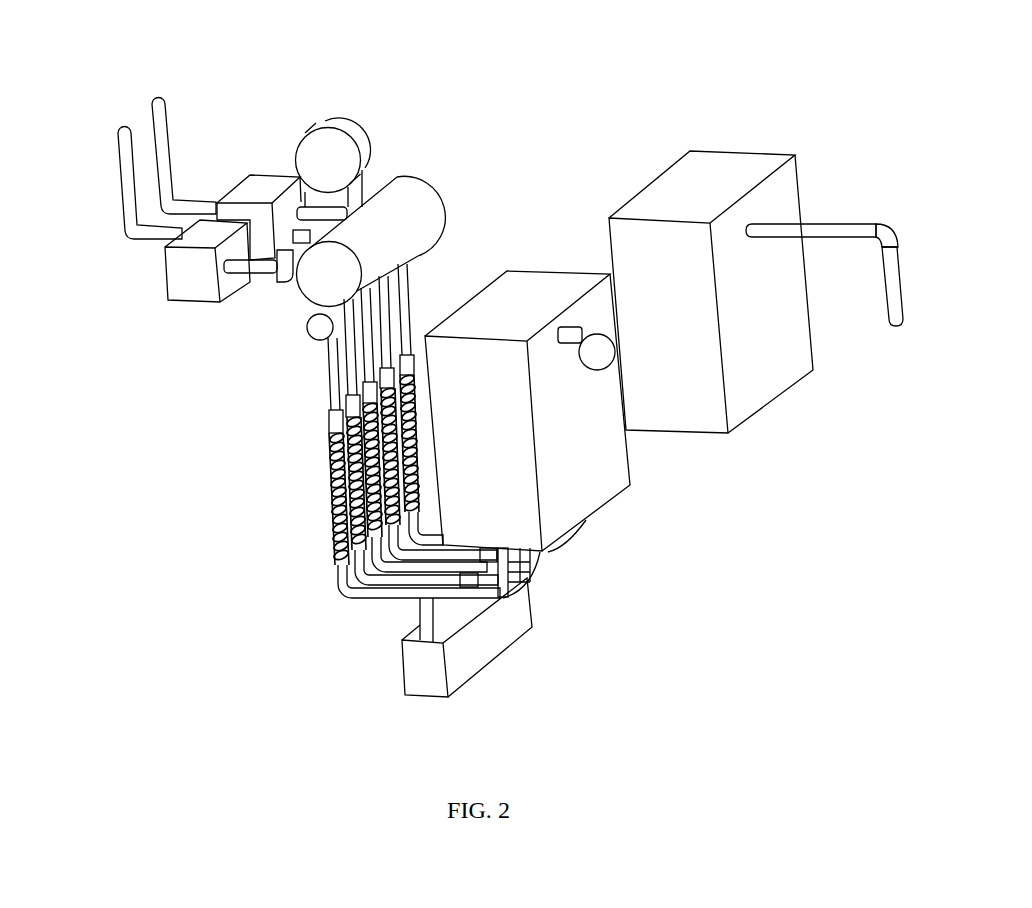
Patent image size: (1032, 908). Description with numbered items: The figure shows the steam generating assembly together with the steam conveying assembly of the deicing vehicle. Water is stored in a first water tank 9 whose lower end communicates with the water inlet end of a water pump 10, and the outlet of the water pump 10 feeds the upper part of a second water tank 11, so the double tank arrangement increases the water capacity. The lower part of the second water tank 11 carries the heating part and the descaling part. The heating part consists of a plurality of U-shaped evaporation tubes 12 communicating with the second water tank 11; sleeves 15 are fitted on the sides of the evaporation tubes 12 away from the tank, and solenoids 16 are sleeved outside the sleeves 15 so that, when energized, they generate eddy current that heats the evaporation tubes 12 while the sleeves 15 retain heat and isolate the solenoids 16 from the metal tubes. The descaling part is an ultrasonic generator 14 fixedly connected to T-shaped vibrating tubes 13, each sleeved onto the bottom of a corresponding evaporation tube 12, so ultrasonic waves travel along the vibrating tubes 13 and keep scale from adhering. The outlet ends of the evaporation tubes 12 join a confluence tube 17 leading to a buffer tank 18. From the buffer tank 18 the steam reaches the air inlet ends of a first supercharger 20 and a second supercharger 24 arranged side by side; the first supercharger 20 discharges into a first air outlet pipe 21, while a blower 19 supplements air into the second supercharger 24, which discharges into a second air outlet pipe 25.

The first water tank 9 is at (703, 330).
The water pump 10 is at (597, 352).
The second water tank 11 is at (517, 500).
The evaporation tubes 12 is at (498, 597).
The vibrating tubes 13 is at (427, 608).
The ultrasonic generator 14 is at (470, 652).
The sleeves 15 is at (348, 563).
The solenoids 16 is at (345, 512).
The confluence tube 17 is at (320, 327).
The buffer tank 18 is at (328, 275).
The blower 19 is at (328, 160).
The first supercharger 20 is at (198, 258).
The first air outlet pipe 21 is at (127, 167).
The second supercharger 24 is at (262, 187).
The second air outlet pipe 25 is at (163, 155).